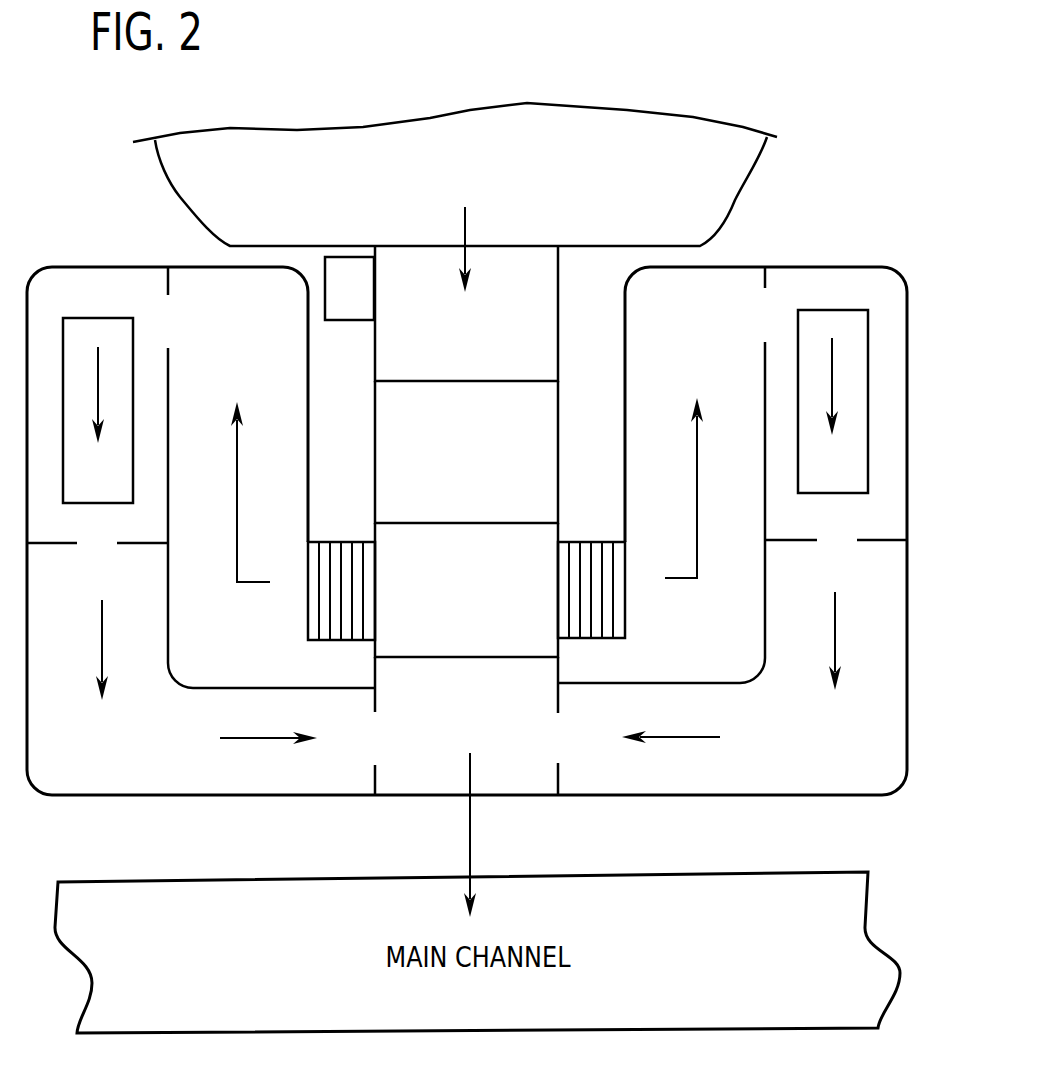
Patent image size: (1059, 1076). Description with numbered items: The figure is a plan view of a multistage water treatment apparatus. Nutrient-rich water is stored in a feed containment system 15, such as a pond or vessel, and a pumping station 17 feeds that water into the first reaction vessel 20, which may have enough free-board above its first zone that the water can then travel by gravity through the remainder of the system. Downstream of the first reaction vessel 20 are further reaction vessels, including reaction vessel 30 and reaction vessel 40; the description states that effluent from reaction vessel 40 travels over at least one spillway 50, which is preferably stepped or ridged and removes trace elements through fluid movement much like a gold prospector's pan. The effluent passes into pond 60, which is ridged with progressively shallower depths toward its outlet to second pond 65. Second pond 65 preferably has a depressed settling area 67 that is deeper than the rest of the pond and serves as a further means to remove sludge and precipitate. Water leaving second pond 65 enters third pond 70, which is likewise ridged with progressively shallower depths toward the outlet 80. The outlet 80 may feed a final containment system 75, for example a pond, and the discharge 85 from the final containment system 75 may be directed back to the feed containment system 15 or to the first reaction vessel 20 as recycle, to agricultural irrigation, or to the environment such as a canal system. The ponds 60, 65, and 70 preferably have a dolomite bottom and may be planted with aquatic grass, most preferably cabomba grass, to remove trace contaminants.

The feed containment system 15 is at (505, 223).
The pumping station 17 is at (334, 303).
The first reaction vessel 20 is at (452, 365).
The cell 2 30 is at (453, 498).
The reaction vessel 40 is at (453, 636).
The spillway 50 is at (345, 540).
The pond 60 is at (221, 392).
The second pond 65 is at (85, 308).
The settling area 67 is at (85, 488).
The third pond 70 is at (97, 748).
The final containment system 75 is at (483, 782).
The outlet 80 is at (363, 755).
The discharge 85 is at (472, 845).